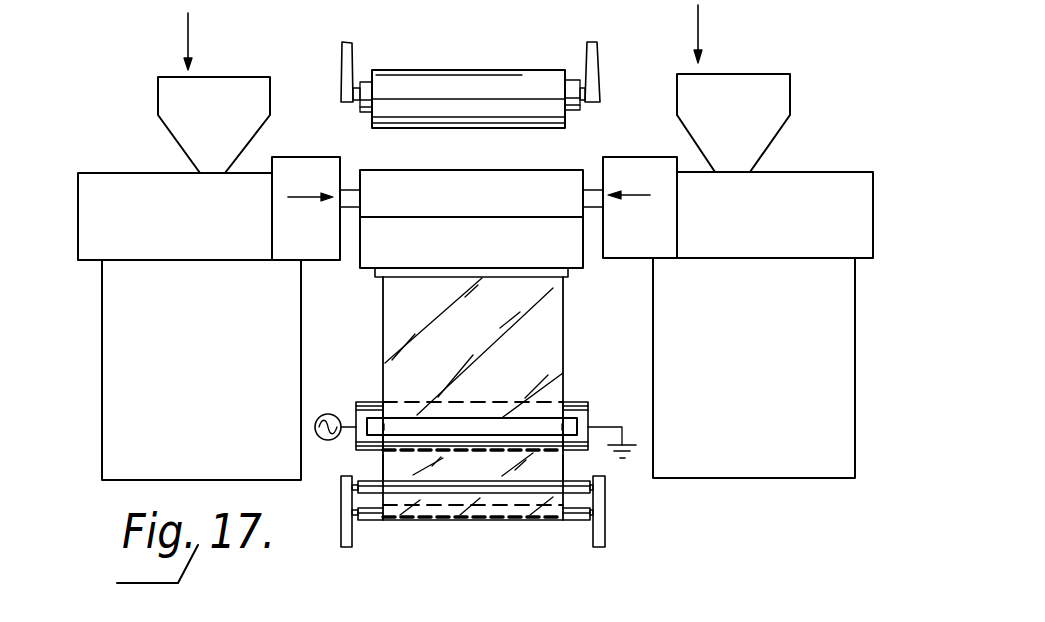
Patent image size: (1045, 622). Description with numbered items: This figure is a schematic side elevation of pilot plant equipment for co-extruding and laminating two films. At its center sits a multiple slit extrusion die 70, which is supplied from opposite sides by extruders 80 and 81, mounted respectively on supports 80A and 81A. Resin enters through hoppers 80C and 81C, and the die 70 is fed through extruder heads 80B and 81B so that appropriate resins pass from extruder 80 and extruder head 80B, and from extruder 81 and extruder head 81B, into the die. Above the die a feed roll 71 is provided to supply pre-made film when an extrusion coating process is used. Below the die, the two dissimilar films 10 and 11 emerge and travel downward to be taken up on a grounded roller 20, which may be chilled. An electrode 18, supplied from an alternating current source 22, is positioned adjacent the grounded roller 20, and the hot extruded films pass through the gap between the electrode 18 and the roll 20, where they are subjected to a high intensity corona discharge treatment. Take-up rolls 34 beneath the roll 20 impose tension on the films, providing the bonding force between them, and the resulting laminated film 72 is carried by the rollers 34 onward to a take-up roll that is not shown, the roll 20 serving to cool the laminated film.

The film 10 is at (532, 313).
The film 11 is at (535, 340).
The electrode 18 is at (525, 426).
The grounded roller 20 is at (375, 402).
The alternating current source 22 is at (337, 410).
The take-up rolls 34 is at (430, 485).
The multiple slit extrusion die 70 is at (470, 169).
The feed roll 71 is at (363, 80).
The laminated film 72 is at (550, 464).
The extruder 80 is at (116, 232).
The support 80A is at (218, 376).
The extruder head 80B is at (351, 185).
The hopper 80C is at (212, 121).
The extruder 81 is at (713, 231).
The support 81A is at (770, 376).
The extruder head 81B is at (593, 187).
The hopper 81C is at (732, 119).